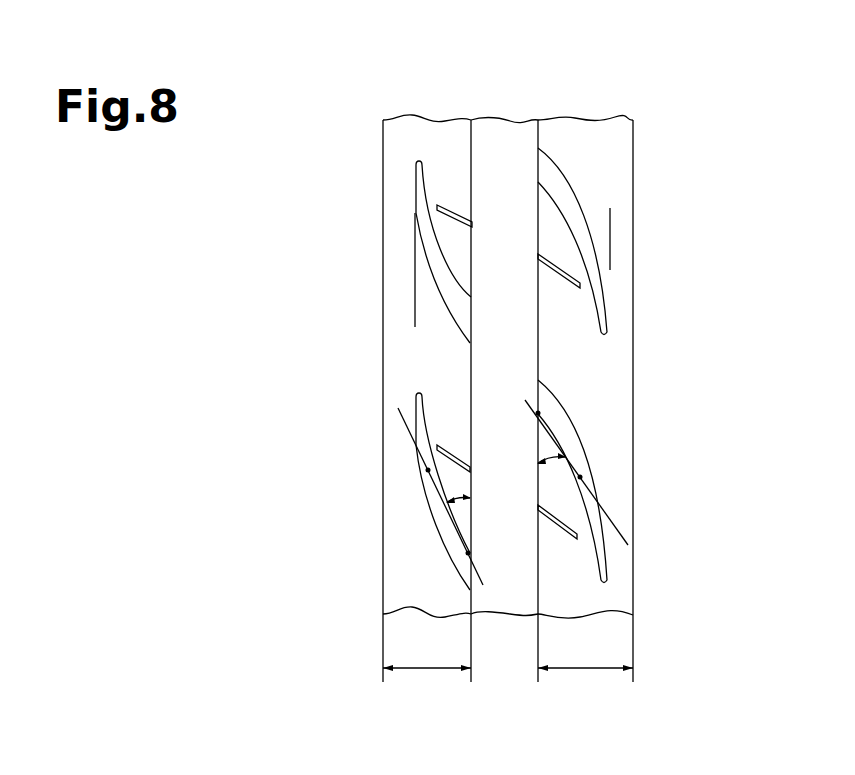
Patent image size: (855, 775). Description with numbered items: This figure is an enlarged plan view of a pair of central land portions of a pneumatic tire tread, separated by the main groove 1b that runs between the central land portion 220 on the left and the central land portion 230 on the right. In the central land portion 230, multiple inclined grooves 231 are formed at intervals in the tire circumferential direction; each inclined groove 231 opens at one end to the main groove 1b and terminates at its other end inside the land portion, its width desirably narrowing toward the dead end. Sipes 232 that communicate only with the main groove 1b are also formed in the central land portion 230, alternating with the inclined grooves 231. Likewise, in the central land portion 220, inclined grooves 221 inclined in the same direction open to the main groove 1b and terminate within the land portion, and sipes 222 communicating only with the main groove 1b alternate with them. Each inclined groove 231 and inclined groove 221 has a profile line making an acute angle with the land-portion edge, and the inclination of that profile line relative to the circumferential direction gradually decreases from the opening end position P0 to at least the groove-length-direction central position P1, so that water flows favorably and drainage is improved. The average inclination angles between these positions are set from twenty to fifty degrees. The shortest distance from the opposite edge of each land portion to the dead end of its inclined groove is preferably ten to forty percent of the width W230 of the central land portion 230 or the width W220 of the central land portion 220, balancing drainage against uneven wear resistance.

The main groove 1b is at (510, 130).
The central land portion 220 is at (448, 114).
The central land portion 230 is at (600, 114).
The inclined groove 221 is at (462, 315).
The sipe 222 is at (450, 210).
The inclined groove 231 is at (570, 192).
The sipe 232 is at (570, 273).
The opening end position P0 is at (463, 560).
The groove-length-direction central position P1 is at (415, 472).
The width of central land portion W220 is at (427, 681).
The width of central land portion W230 is at (585, 681).